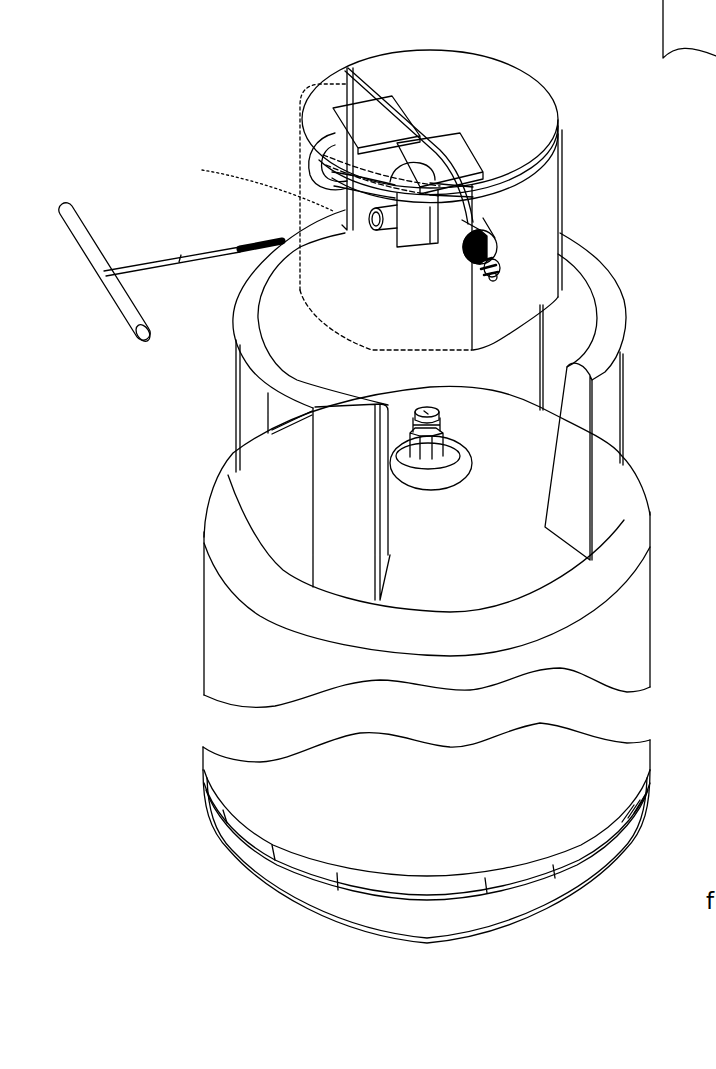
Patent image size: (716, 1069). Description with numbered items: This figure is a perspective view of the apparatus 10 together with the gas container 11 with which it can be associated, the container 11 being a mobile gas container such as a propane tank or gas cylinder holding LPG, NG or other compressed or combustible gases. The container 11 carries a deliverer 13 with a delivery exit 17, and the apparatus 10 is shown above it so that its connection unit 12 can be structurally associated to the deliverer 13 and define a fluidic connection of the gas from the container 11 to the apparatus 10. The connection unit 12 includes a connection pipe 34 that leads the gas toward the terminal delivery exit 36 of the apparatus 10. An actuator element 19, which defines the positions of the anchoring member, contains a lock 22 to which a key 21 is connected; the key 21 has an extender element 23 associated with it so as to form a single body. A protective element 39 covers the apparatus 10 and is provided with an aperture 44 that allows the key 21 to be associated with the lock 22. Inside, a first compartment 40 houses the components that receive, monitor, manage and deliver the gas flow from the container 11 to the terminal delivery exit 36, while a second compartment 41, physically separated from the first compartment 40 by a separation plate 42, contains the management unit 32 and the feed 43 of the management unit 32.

The apparatus 10 is at (281, 77).
The container 11 is at (622, 632).
The connection unit 12 is at (418, 254).
The deliverer 13 is at (442, 428).
The delivery exit 17 is at (427, 405).
The actuator element 19 is at (384, 221).
The key 21 is at (255, 236).
The lock 22 is at (371, 226).
The extender element 23 is at (183, 258).
The management unit 32 is at (373, 127).
The connection pipe 34 is at (333, 146).
The terminal delivery exit 36 is at (497, 277).
The protective element 39 is at (473, 78).
The first compartment 40 is at (414, 336).
The second compartment 41 is at (346, 85).
The separation plate 42 is at (478, 180).
The feed 43 is at (425, 160).
The aperture 44 is at (256, 184).